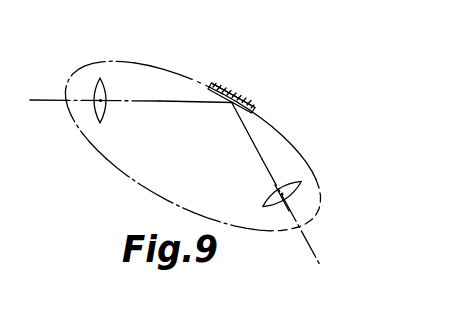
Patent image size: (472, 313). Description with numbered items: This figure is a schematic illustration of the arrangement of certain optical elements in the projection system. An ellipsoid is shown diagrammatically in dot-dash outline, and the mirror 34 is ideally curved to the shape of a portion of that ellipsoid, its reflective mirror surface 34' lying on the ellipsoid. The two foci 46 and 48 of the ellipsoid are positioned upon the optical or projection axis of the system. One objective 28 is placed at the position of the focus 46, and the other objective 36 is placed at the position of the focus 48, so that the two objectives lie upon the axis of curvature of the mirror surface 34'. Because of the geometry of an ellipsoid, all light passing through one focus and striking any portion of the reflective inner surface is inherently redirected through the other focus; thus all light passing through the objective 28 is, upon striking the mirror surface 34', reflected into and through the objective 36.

The objective 28 is at (96, 115).
The mirror 34 is at (251, 98).
The mirror surface 34' is at (218, 74).
The objective 36 is at (290, 186).
The focus 46 is at (101, 101).
The focus 48 is at (282, 196).